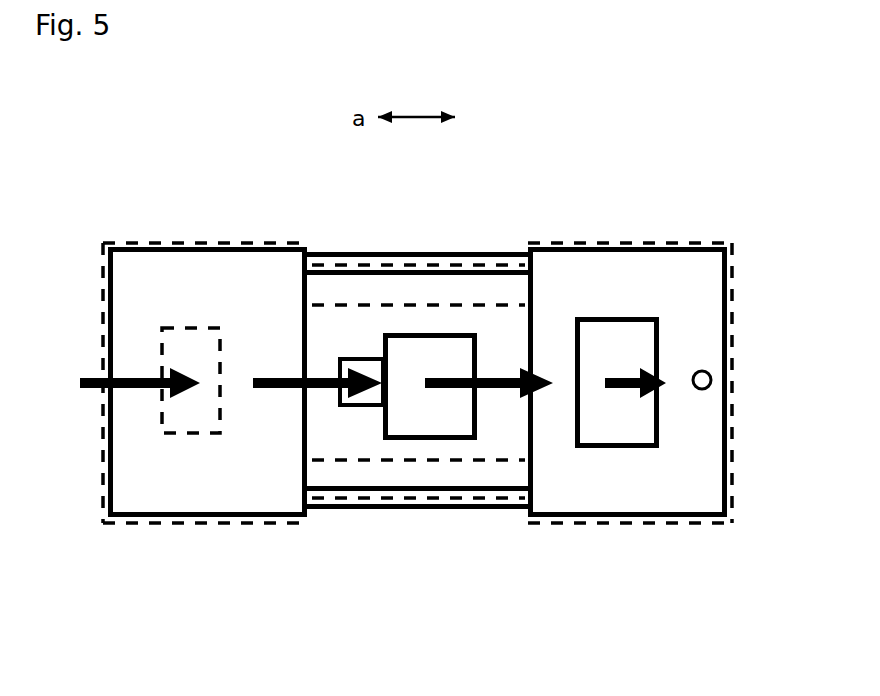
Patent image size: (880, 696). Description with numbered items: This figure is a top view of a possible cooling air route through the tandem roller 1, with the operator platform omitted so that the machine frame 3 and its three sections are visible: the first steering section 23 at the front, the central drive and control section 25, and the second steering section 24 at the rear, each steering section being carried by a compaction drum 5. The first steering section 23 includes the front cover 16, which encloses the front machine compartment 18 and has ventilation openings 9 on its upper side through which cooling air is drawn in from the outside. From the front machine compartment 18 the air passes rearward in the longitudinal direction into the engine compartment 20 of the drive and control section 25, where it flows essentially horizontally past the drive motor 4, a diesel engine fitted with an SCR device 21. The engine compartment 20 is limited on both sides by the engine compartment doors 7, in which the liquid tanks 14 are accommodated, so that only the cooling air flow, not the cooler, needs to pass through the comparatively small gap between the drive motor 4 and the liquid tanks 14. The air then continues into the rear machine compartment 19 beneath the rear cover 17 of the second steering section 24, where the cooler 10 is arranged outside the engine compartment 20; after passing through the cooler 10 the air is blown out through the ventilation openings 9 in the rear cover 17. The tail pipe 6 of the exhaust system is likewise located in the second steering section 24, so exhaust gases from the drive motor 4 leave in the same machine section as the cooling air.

The tandem roller 1 is at (564, 143).
The machine frame 3 is at (545, 250).
The drive motor 4 is at (408, 408).
The compaction drum 5 is at (185, 244).
The tail pipe 6 is at (708, 374).
The engine compartment door 7 is at (470, 255).
The ventilation openings 9 is at (203, 433).
The cooler 10 is at (607, 428).
The liquid tanks 14 is at (400, 295).
The front cover 16 is at (155, 283).
The rear cover 17 is at (690, 276).
The front machine compartment 18 is at (155, 463).
The rear machine compartment 19 is at (678, 461).
The engine compartment 20 is at (367, 325).
The SCR device 21 is at (367, 400).
The first steering section 23 is at (303, 622).
The second steering section 24 is at (730, 622).
The drive and control section 25 is at (529, 622).